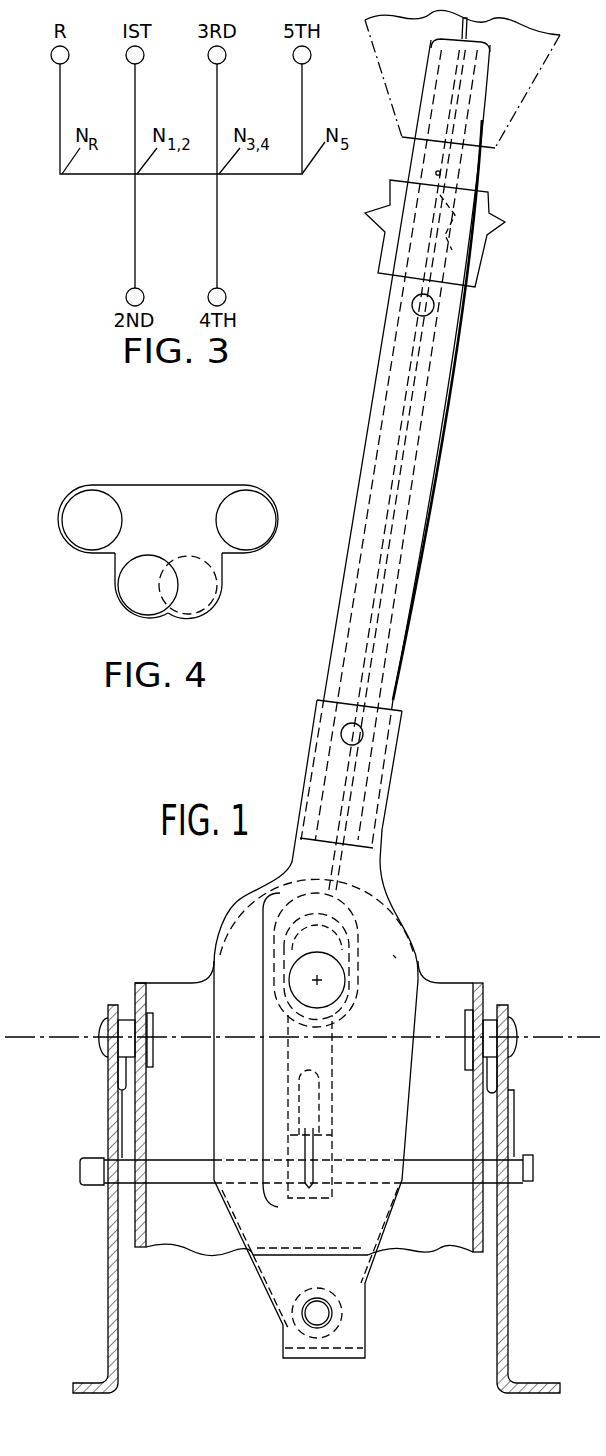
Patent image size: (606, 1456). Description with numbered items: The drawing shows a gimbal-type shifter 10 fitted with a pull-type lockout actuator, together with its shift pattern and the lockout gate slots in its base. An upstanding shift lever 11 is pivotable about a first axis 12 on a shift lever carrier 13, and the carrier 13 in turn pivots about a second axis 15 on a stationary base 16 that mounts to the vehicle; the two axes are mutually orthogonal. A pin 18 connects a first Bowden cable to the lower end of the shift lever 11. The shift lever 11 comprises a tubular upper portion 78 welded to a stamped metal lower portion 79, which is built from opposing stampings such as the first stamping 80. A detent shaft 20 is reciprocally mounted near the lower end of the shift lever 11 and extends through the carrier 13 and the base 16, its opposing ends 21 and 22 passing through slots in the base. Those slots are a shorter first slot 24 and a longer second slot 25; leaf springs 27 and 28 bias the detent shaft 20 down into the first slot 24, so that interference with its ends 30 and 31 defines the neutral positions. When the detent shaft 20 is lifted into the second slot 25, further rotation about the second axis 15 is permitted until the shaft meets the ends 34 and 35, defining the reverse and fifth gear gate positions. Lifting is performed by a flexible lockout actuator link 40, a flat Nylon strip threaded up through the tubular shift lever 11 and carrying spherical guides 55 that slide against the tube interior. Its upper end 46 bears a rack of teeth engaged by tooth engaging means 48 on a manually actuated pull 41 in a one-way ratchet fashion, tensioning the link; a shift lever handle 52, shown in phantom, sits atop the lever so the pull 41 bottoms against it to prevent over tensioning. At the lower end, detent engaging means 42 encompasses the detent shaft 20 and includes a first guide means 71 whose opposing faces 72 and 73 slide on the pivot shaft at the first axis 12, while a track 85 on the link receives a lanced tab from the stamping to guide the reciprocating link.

In FIG. 1, the shifter 10 is at (484, 596).
In FIG. 1, the shift lever 11 is at (423, 494).
In FIG. 1, the first axis 12 is at (318, 978).
In FIG. 1, the shift lever carrier 13 is at (442, 992).
In FIG. 1, the second axis 15 is at (535, 1037).
In FIG. 1, the stationary base 16 is at (508, 1093).
In FIG. 1, the pin 18 is at (318, 1315).
In FIG. 1, the detent shaft 20 is at (183, 1180).
In FIG. 1, the end of detent shaft 21 is at (80, 1178).
In FIG. 1, the end of detent shaft 22 is at (528, 1180).
In FIG. 4, the first slot 24 is at (173, 600).
In FIG. 4, the second slot 25 is at (155, 492).
In FIG. 1, the leaf spring 27 is at (105, 1103).
In FIG. 1, the leaf spring 28 is at (515, 1118).
In FIG. 4, the end of first slot 30 is at (115, 585).
In FIG. 4, the end of first slot 31 is at (222, 587).
In FIG. 4, the end of second slot 34 is at (60, 517).
In FIG. 4, the end of second slot 35 is at (273, 492).
In FIG. 1, the flexible lockout actuator link 40 is at (371, 676).
In FIG. 1, the pull 41 is at (477, 247).
In FIG. 1, the detent engaging means 42 is at (262, 1052).
In FIG. 1, the upper end of actuator link 46 is at (439, 173).
In FIG. 1, the tooth engaging means 48 is at (450, 208).
In FIG. 1, the shift lever handle 52 is at (517, 90).
In FIG. 1, the spherical guide 55 is at (427, 307).
In FIG. 1, the first guide means 71 is at (355, 880).
In FIG. 1, the first face 72 is at (290, 935).
In FIG. 1, the second face 73 is at (345, 905).
In FIG. 1, the tubular upper portion 78 is at (397, 641).
In FIG. 1, the stamped metal lower portion 79 is at (393, 955).
In FIG. 1, the first stamping 80 is at (399, 1017).
In FIG. 1, the track 85 is at (310, 1100).